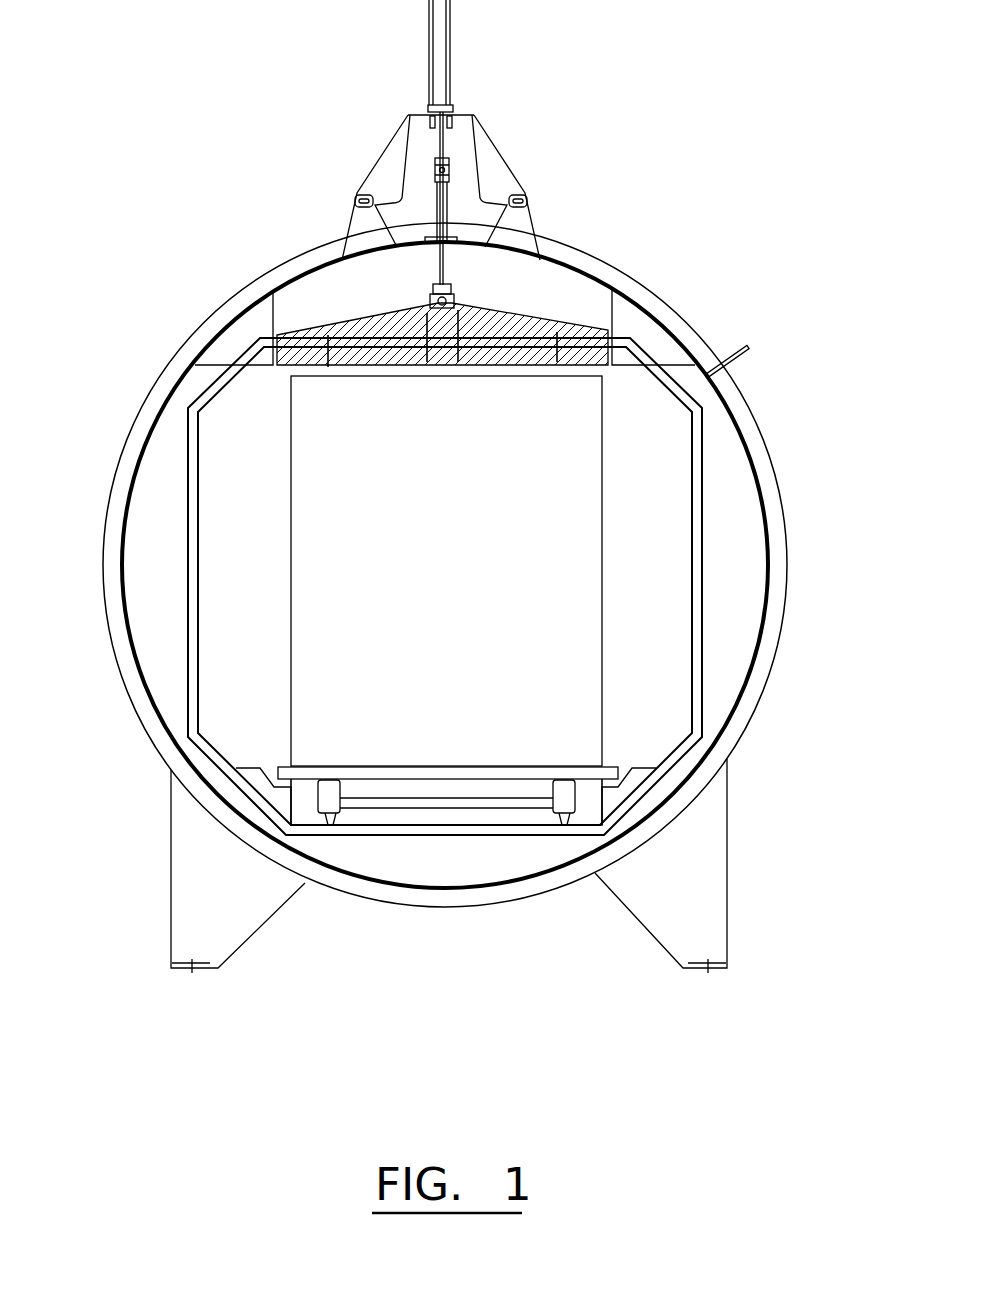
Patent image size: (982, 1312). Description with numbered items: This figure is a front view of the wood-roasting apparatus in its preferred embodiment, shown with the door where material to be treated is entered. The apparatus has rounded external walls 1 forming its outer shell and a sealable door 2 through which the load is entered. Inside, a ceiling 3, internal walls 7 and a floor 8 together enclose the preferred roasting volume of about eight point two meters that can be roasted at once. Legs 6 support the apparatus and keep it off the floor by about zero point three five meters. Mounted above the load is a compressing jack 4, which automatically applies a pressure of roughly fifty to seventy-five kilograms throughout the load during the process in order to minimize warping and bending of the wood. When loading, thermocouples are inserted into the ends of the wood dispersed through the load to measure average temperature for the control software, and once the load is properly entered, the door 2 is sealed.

The rounded external walls 1 is at (650, 283).
The sealable door 2 is at (315, 627).
The ceiling 3 is at (348, 377).
The compressing jack 4 is at (380, 153).
The legs 6 is at (171, 922).
The internal walls 7 is at (702, 502).
The floor 8 is at (489, 766).